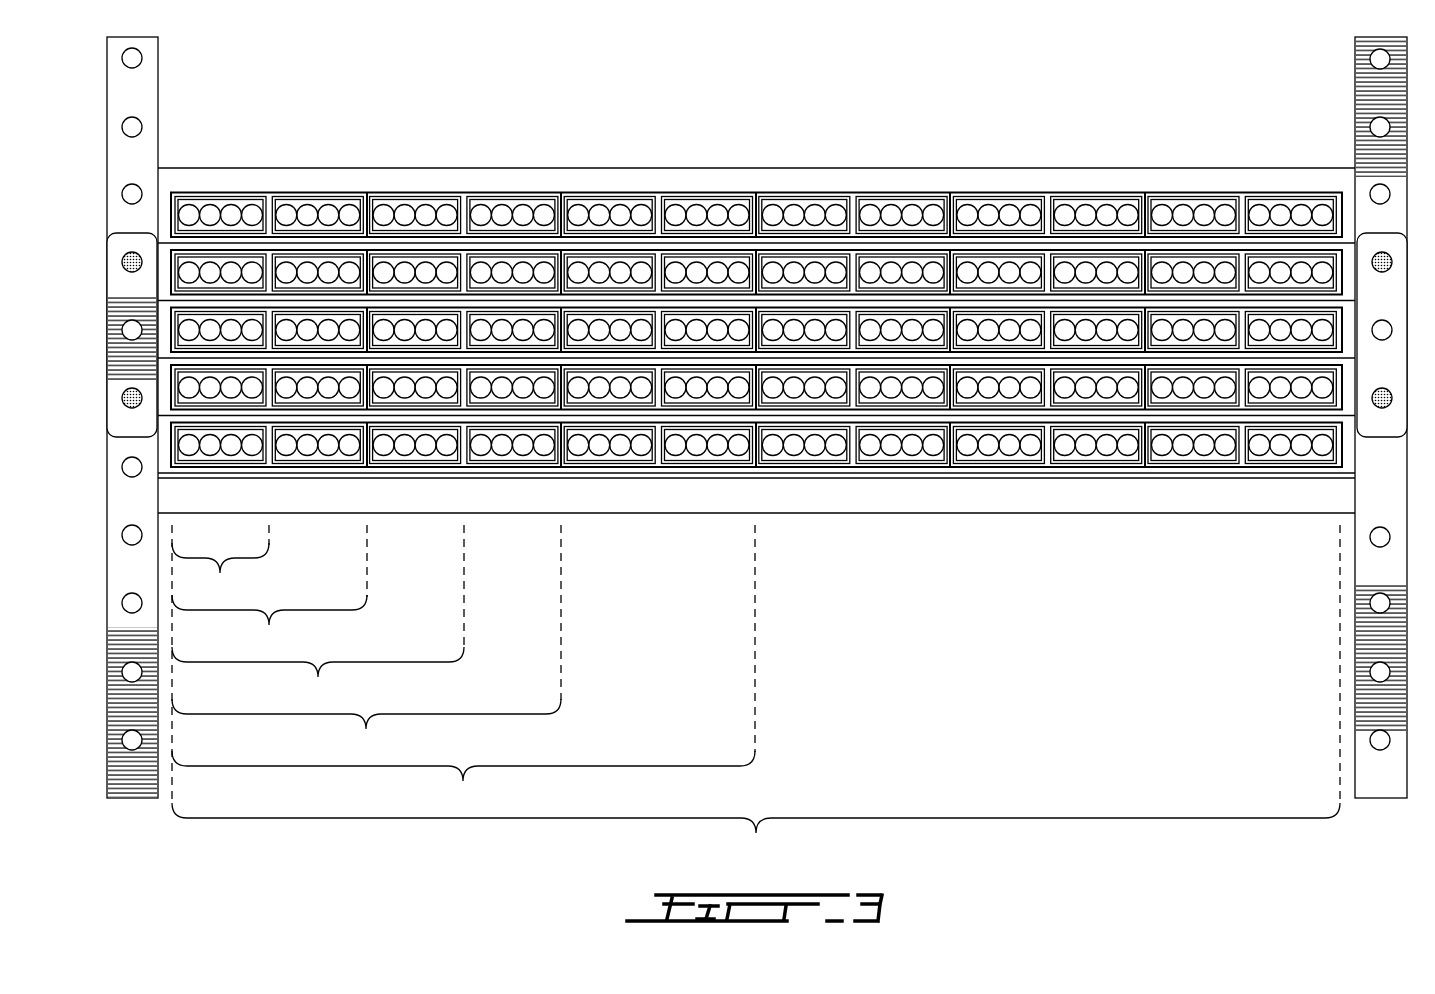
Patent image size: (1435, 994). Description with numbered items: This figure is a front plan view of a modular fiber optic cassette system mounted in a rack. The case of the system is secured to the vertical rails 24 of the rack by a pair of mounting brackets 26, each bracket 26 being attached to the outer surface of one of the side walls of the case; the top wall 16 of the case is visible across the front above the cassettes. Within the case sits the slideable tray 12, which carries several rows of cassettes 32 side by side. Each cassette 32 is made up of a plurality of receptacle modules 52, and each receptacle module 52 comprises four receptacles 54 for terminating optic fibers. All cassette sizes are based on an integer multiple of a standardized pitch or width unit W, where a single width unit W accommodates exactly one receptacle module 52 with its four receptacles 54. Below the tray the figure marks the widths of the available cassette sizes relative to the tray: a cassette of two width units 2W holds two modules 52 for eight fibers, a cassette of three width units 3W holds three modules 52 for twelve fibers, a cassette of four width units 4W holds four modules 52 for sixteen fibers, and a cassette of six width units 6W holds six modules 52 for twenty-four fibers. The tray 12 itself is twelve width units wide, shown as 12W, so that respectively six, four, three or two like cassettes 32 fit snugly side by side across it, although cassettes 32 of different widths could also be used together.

The slideable tray 12 is at (1162, 415).
The top wall 16 is at (228, 166).
The rails 24 is at (145, 96).
The mounting brackets 26 is at (115, 297).
The cassette 32 is at (388, 248).
The receptacle module 52 is at (512, 203).
The receptacles 54 is at (697, 213).
The width unit W is at (220, 575).
The 2 W cassette width 2W is at (880, 137).
The 3 W cassette width 3W is at (988, 137).
The 4 W cassette width 4W is at (1080, 137).
The 6 W cassette width 6W is at (1165, 137).
The 12 W tray width 12W is at (756, 835).